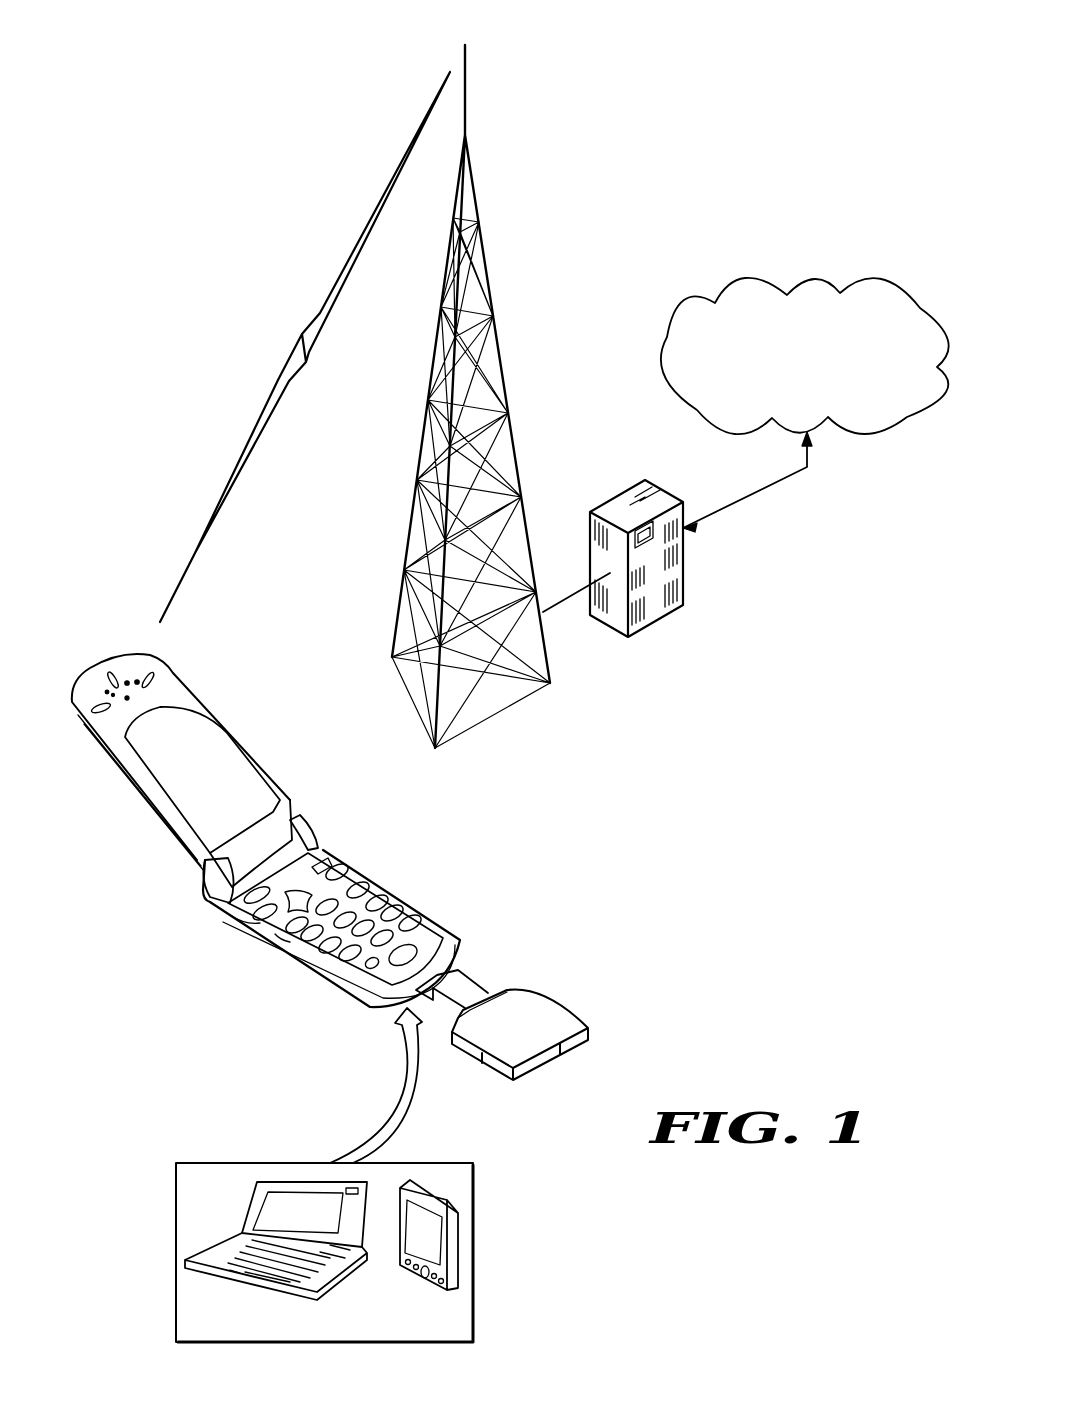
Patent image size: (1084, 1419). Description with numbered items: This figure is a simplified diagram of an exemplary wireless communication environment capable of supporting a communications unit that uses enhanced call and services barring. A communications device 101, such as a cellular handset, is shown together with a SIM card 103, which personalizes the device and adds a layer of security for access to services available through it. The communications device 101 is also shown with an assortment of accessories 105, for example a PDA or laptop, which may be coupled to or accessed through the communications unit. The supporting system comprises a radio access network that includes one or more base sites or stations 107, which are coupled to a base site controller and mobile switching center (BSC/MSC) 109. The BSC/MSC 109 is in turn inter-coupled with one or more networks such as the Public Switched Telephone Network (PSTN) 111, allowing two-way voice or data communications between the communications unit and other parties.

The communications device 101 is at (270, 958).
The SIM card 103 is at (557, 1003).
The accessories 105 is at (175, 1233).
The base sites or stations 107 is at (498, 348).
The base site controller and mobile switching center (BSC/MSC) 109 is at (652, 622).
The Public Switched Telephone Network (PSTN) 111 is at (836, 288).